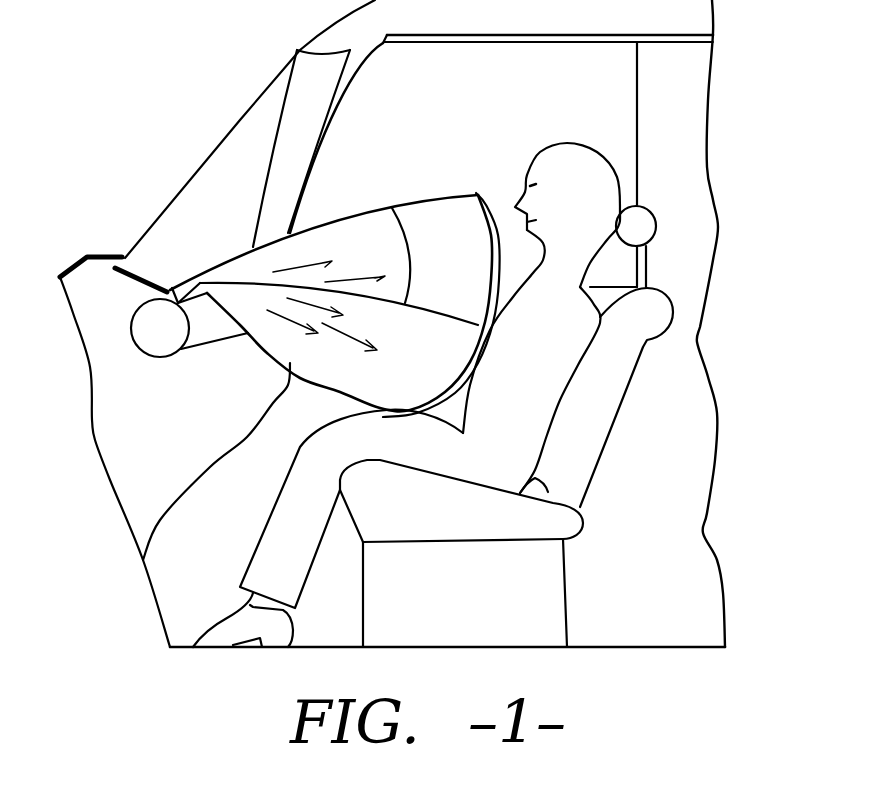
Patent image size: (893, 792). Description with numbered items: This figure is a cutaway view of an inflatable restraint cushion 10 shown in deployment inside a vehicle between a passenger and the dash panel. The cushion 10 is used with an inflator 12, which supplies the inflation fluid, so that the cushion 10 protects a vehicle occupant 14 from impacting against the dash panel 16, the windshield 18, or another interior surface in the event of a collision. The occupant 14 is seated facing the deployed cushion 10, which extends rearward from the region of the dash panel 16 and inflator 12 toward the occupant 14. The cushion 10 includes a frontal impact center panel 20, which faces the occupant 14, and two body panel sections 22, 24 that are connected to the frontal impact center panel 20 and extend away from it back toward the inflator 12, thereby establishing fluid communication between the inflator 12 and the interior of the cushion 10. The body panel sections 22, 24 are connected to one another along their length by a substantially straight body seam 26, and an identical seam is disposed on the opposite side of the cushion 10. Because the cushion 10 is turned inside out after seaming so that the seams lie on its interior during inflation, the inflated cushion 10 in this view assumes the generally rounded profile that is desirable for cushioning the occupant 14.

The inflatable restraint cushion 10 is at (305, 239).
The inflator 12 is at (157, 333).
The vehicle occupant 14 is at (617, 173).
The dash panel 16 is at (262, 387).
The windshield 18 is at (268, 112).
The frontal impact center panel 20 is at (335, 277).
The body panel section 22 is at (467, 256).
The body panel section 24 is at (442, 377).
The body seam 26 is at (392, 208).